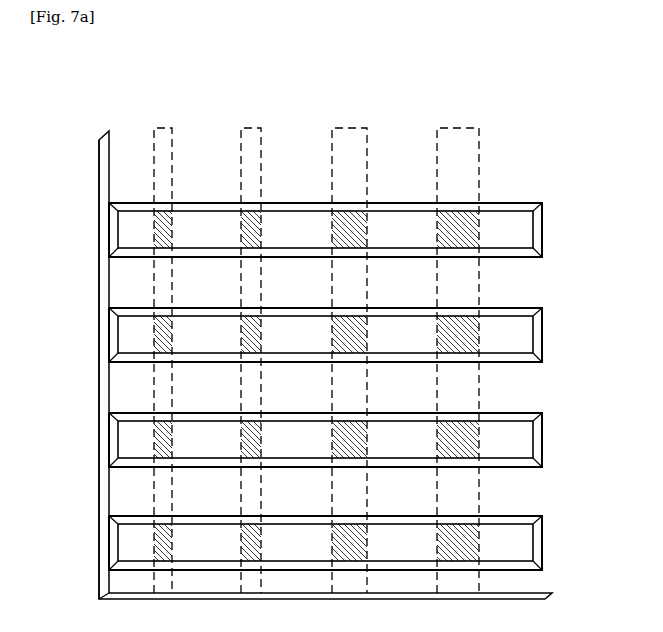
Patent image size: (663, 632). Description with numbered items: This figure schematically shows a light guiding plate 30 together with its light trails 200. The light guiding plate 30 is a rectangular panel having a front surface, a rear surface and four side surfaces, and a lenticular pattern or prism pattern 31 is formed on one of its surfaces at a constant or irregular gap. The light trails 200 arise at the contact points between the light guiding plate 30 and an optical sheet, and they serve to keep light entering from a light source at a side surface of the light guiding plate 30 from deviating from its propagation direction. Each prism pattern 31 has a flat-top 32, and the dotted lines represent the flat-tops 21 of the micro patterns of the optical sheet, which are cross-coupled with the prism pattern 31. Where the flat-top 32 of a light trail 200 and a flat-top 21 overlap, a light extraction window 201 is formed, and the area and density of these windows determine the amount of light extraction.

The light trail 200 is at (540, 115).
The light guiding plate 30 is at (105, 159).
The flat-top of micro pattern 21 is at (352, 141).
The lenticular pattern or prism pattern 31 is at (523, 204).
The flat-top of lenticular or prism pattern 32 is at (519, 232).
The light extraction window 201 is at (458, 336).